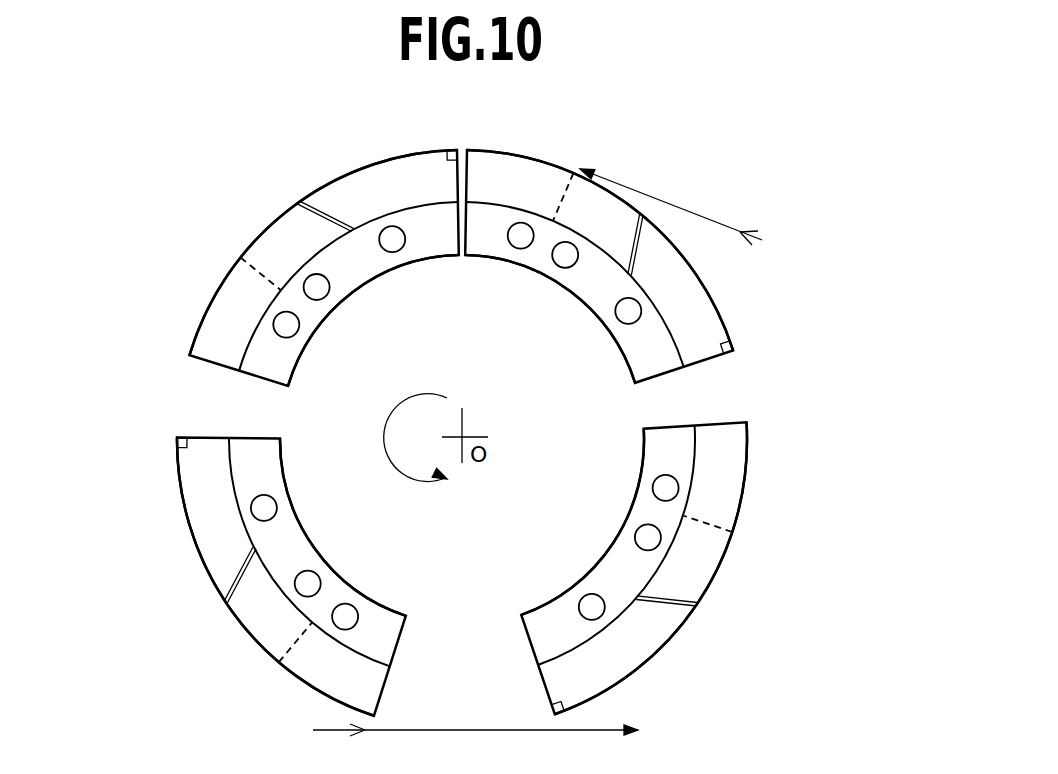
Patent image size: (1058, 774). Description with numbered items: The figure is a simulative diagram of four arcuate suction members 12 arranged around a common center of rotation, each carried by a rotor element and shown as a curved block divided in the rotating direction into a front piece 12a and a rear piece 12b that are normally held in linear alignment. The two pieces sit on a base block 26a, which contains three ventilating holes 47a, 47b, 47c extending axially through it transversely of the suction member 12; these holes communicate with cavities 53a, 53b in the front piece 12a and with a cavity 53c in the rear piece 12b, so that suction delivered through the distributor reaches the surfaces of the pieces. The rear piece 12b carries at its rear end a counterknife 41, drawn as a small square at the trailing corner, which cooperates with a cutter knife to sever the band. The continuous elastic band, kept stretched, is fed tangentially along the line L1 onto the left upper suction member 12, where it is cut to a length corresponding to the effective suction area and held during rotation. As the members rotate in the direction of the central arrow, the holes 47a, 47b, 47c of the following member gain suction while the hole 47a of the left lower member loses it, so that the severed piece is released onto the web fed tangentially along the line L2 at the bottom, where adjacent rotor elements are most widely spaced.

The suction member 12 is at (240, 240).
The front piece 12a is at (223, 277).
The rear piece 12b is at (347, 170).
The base block 26a is at (430, 233).
The counterknife 41 is at (451, 148).
The ventilating hole 47a is at (287, 326).
The ventilating hole 47b is at (317, 288).
The ventilating hole 47c is at (393, 241).
The cavity 53a is at (227, 337).
The cavity 53b is at (280, 253).
The cavity 53c is at (337, 203).
The feed line of elastic band L1 is at (680, 200).
The feed line of web L2 is at (525, 738).